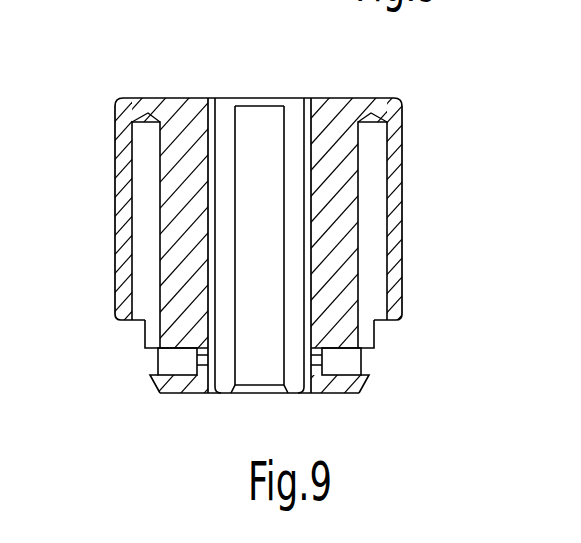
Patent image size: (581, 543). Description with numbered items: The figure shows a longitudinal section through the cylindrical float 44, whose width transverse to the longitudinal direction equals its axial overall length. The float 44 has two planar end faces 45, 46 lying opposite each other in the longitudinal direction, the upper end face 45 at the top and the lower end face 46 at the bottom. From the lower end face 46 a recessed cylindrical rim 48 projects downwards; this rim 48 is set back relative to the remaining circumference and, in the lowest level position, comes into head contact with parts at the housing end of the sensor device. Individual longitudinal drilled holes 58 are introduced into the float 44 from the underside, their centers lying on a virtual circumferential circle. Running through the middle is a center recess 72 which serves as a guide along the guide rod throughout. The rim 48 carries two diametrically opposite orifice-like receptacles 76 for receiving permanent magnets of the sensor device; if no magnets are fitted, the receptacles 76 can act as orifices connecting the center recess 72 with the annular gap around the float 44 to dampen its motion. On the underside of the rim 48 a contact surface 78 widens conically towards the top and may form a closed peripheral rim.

The float 44 is at (0, 257).
The upper end face 45 is at (348, 97).
The lower end face 46 is at (183, 394).
The rim 48 is at (146, 334).
The longitudinal drilled holes 58 is at (153, 202).
The center recess 72 is at (258, 137).
The receptacles 76 is at (345, 357).
The contact surface 78 is at (364, 378).